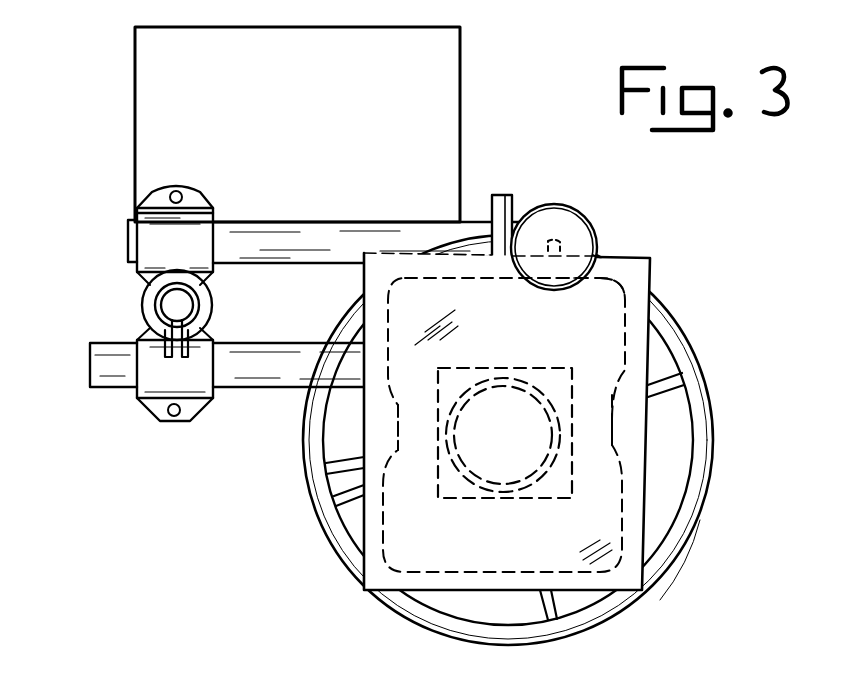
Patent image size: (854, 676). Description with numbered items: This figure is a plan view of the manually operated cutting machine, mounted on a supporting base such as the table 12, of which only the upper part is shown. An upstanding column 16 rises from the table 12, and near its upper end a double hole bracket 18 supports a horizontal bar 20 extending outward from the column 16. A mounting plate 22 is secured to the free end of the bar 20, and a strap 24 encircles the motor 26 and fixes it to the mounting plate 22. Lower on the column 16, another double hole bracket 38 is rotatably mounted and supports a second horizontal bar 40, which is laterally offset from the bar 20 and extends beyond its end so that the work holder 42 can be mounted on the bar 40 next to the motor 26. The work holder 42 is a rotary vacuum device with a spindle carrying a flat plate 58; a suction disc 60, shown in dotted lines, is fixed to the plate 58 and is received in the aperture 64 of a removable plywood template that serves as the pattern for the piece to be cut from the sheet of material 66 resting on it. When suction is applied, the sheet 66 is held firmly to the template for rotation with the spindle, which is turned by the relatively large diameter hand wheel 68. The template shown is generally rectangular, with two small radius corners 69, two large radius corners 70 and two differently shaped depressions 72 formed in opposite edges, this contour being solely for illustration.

The table 12 is at (112, 105).
The upstanding column 16 is at (160, 307).
The double hole bracket 18 is at (215, 213).
The horizontal bar 20 is at (308, 222).
The mounting plate 22 is at (497, 195).
The strap 24 is at (553, 205).
The motor 26 is at (570, 232).
The double hole bracket 38 is at (135, 398).
The horizontal bar 40 is at (258, 388).
The work holder 42 is at (730, 383).
The flat plate 58 is at (470, 498).
The suction disc 60 is at (542, 480).
The aperture 64 is at (504, 498).
The sheet of material 66 is at (656, 262).
The hand wheel 68 is at (688, 545).
The small radius corners 69 is at (628, 282).
The large radius corners 70 is at (395, 303).
The depressions 72 is at (398, 432).